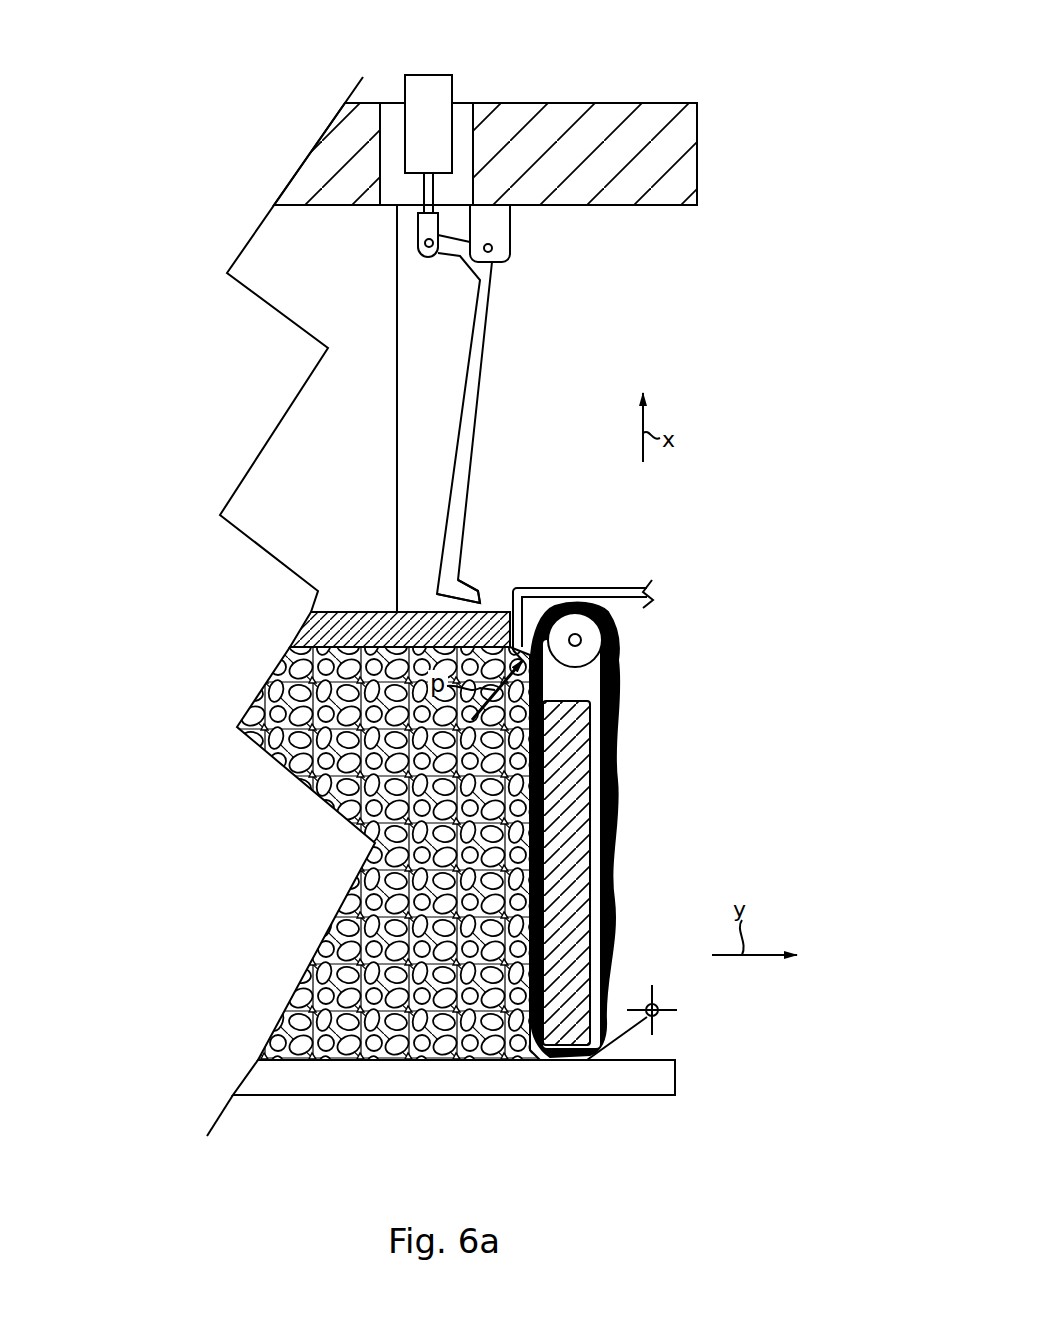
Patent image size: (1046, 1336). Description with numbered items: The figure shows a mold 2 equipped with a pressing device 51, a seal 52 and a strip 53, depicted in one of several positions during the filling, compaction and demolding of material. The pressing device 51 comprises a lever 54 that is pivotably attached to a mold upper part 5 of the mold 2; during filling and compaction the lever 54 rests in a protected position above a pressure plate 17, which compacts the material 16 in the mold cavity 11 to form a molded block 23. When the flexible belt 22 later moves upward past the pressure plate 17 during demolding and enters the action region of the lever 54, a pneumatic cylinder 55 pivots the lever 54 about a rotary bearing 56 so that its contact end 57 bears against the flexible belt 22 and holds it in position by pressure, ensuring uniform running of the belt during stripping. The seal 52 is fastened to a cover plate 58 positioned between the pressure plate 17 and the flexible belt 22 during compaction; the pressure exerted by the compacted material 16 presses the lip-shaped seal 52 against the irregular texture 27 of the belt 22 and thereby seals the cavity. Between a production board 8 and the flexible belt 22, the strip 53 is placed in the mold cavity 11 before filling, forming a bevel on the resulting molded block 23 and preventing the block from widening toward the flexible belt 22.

The mold 2 is at (602, 70).
The mold upper part 5 is at (662, 252).
The production board 8 is at (650, 1060).
The mold cavity 11 is at (316, 880).
The material 16 is at (377, 772).
The pressure plate 17 is at (353, 612).
The flexible belt 22 is at (606, 742).
The molded block 23 is at (363, 928).
The irregular texture 27 is at (530, 760).
The pressing device 51 is at (548, 308).
The seal 52 is at (527, 620).
The strip 53 is at (535, 1057).
The lever 54 is at (463, 435).
The pneumatic cylinder 55 is at (424, 98).
The rotary bearing 56 is at (492, 249).
The contact end 57 is at (460, 592).
The cover plate 58 is at (622, 588).